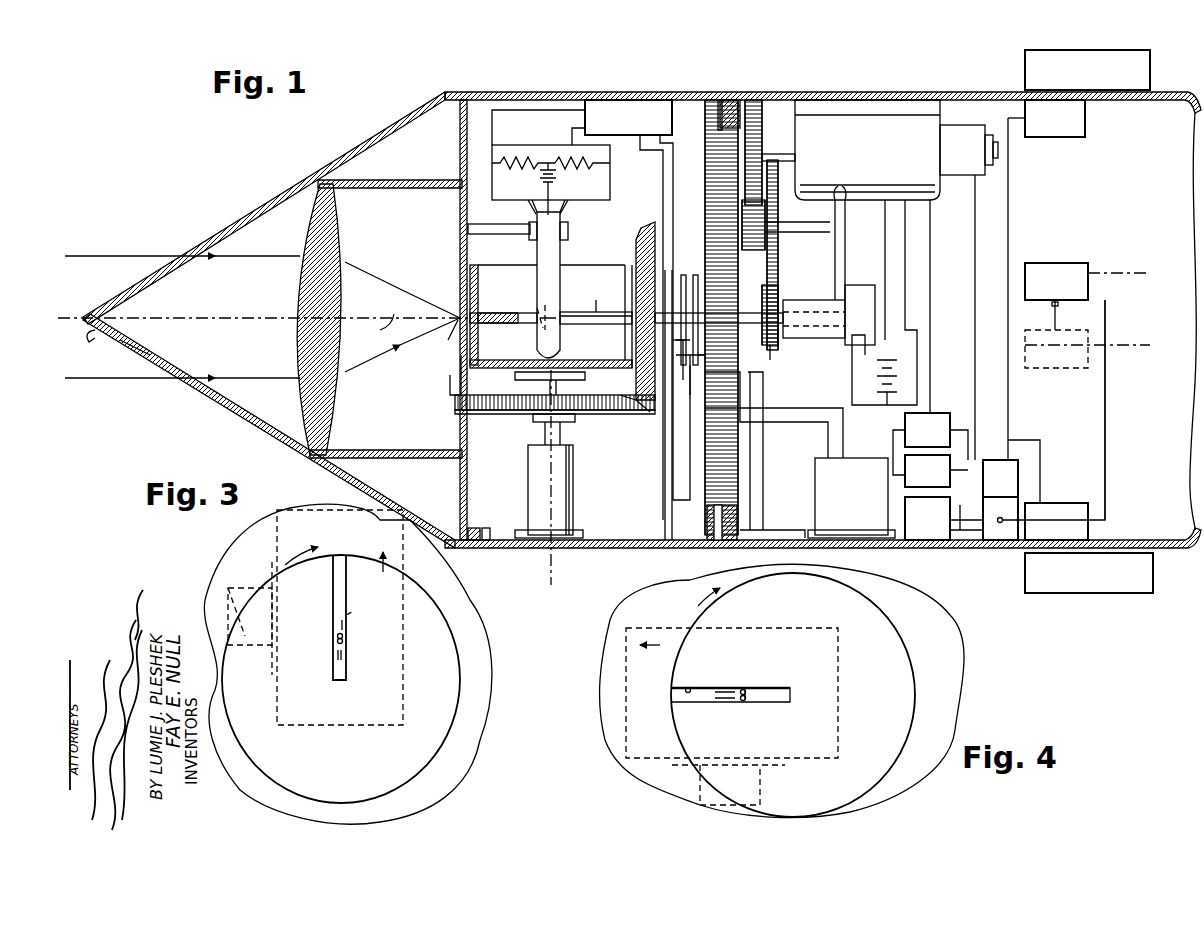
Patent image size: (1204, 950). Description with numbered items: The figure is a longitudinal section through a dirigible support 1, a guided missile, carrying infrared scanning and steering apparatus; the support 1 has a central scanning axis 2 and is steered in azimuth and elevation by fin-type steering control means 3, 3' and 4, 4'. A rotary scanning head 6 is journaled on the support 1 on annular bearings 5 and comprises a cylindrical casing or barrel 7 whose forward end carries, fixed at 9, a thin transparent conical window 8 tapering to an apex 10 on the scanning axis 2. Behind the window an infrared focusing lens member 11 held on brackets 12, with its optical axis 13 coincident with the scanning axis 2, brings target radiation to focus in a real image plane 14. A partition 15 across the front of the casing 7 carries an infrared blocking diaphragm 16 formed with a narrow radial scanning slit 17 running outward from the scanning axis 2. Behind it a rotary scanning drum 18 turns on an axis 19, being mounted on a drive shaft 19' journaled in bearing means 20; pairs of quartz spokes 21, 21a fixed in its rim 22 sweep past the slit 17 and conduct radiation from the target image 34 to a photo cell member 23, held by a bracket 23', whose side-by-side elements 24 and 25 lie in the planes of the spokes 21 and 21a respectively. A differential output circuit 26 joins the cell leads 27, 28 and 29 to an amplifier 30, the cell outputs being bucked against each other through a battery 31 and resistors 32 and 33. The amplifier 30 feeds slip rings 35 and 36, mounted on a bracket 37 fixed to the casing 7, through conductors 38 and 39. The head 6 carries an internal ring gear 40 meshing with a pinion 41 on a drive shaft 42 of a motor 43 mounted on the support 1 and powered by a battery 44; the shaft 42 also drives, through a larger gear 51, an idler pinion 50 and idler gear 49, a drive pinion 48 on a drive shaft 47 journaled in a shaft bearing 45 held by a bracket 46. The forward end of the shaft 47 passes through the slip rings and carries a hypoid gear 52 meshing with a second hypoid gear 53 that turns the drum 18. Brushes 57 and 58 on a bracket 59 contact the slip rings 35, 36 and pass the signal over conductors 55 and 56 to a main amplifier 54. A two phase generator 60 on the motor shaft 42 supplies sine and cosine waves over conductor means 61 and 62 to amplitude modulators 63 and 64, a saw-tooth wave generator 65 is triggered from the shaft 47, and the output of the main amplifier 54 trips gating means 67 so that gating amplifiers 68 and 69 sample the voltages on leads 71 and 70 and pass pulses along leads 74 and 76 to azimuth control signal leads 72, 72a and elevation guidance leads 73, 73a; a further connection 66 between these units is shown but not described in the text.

In FIG. 1, the dirigible support 1 is at (890, 92).
In FIG. 1, the central scanning axis 2 is at (85, 318).
In FIG. 1, the X coordinate steering control means 3 is at (771, 332).
In FIG. 1, the X coordinate steering control means 3' is at (1087, 333).
In FIG. 1, the Y coordinate steering control means 4 is at (1089, 584).
In FIG. 1, the Y coordinate steering control means 4' is at (1098, 70).
In FIG. 1, the annular bearings 5 is at (732, 548).
In FIG. 1, the rotary scanning head 6 is at (568, 80).
In FIG. 1, the cylindrical casing or barrel 7 is at (488, 550).
In FIG. 1, the transparent conical nose or infrared radiation passing window 8 is at (194, 400).
In FIG. 4, the transparent conical nose or infrared radiation passing window 8 is at (722, 695).
In FIG. 1, the forward end fixing of window 9 is at (460, 552).
In FIG. 1, the apex of window 10 is at (88, 337).
In FIG. 1, the infrared radiation focusing lens member 11 is at (336, 410).
In FIG. 1, the brackets 12 is at (376, 456).
In FIG. 1, the optical axis 13 is at (386, 326).
In FIG. 1, the real image focusing plane 14 is at (494, 310).
In FIG. 1, the partition 15 is at (461, 234).
In FIG. 3, the partition 15 is at (455, 737).
In FIG. 4, the partition 15 is at (938, 661).
In FIG. 1, the infrared radiation blocking diaphragm 16 is at (460, 360).
In FIG. 3, the infrared radiation blocking diaphragm 16 is at (454, 622).
In FIG. 4, the infrared radiation blocking diaphragm 16 is at (912, 640).
In FIG. 1, the radial scanning slot or slit 17 is at (455, 324).
In FIG. 3, the radial scanning slot or slit 17 is at (346, 626).
In FIG. 4, the radial scanning slot or slit 17 is at (732, 690).
In FIG. 1, the rotary scanning drum 18 is at (580, 258).
In FIG. 3, the rotary scanning drum 18 is at (412, 608).
In FIG. 4, the rotary scanning drum 18 is at (668, 626).
In FIG. 1, the drum axis 19 is at (578, 477).
In FIG. 1, the drive shaft 19' is at (571, 429).
In FIG. 1, the bearing means 20 is at (528, 481).
In FIG. 3, the bearing means 20 is at (250, 618).
In FIG. 4, the bearing means 20 is at (765, 782).
In FIG. 1, the infrared radiation transmitting spoke 21 is at (580, 324).
In FIG. 3, the infrared radiation transmitting spoke 21 is at (336, 640).
In FIG. 4, the infrared radiation transmitting spoke 21 is at (745, 699).
In FIG. 1, the infrared radiation transmitting spoke 21a is at (598, 298).
In FIG. 3, the infrared radiation transmitting spoke 21a is at (352, 644).
In FIG. 4, the infrared radiation transmitting spoke 21a is at (750, 688).
In FIG. 1, the rim of drum 22 is at (622, 276).
In FIG. 1, the photo cell member 23 is at (534, 242).
In FIG. 1, the bracket 23' is at (499, 237).
In FIG. 1, the infrared radiation responsive cell element 24 is at (536, 338).
In FIG. 1, the infrared radiation responsive cell element 25 is at (534, 306).
In FIG. 1, the differential output circuit 26 is at (618, 188).
In FIG. 1, the photo cell lead 27 is at (545, 197).
In FIG. 1, the photo cell lead 28 is at (524, 209).
In FIG. 1, the photo cell lead 29 is at (580, 209).
In FIG. 1, the amplifier 30 is at (620, 100).
In FIG. 1, the battery 31 is at (557, 180).
In FIG. 1, the resistor 32 is at (523, 154).
In FIG. 1, the resistor 33 is at (581, 154).
In FIG. 3, the infrared target image 34 is at (354, 614).
In FIG. 4, the infrared target image 34 is at (690, 688).
In FIG. 1, the slip ring 35 is at (683, 272).
In FIG. 1, the slip ring 36 is at (695, 272).
In FIG. 1, the bracket 37 is at (664, 489).
In FIG. 1, the conductor 38 is at (662, 178).
In FIG. 1, the conductor 39 is at (678, 317).
In FIG. 1, the internal ring gear 40 is at (705, 489).
In FIG. 1, the pinion 41 is at (710, 152).
In FIG. 1, the drive shaft 42 is at (772, 150).
In FIG. 1, the motor 43 is at (867, 150).
In FIG. 1, the battery or current source 44 is at (876, 374).
In FIG. 1, the shaft bearing 45 is at (822, 305).
In FIG. 1, the bracket 46 is at (845, 245).
In FIG. 1, the drive shaft 47 is at (780, 345).
In FIG. 1, the drive pinion 48 is at (772, 354).
In FIG. 1, the idler gear 49 is at (778, 273).
In FIG. 1, the idler pinion 50 is at (786, 234).
In FIG. 1, the larger gear 51 is at (757, 100).
In FIG. 1, the hypoid gear 52 is at (637, 311).
In FIG. 1, the second hypoid gear 53 is at (484, 424).
In FIG. 1, the main amplifier 54 is at (860, 525).
In FIG. 1, the electrical input conductor 55 is at (828, 440).
In FIG. 1, the electrical input conductor 56 is at (843, 440).
In FIG. 1, the brush 57 is at (696, 360).
In FIG. 1, the brush 58 is at (690, 345).
In FIG. 1, the bracket 59 is at (764, 512).
In FIG. 1, the two phase sine and cosine wave electrical generator 60 is at (955, 135).
In FIG. 1, the electrical conductor means 61 is at (931, 385).
In FIG. 1, the electrical conductor means 62 is at (976, 385).
In FIG. 1, the sine wave amplitude modulator 63 is at (927, 430).
In FIG. 1, the cosine wave amplitude modulator 64 is at (927, 471).
In FIG. 1, the saw-tooth wave generator 65 is at (860, 292).
In FIG. 1, the lead wire 66 is at (893, 428).
In FIG. 1, the gating means 67 is at (927, 518).
In FIG. 1, the gating amplifier 68 is at (1000, 478).
In FIG. 1, the gating amplifier 69 is at (1000, 518).
In FIG. 1, the lead 70 is at (968, 436).
In FIG. 1, the lead 71 is at (966, 517).
In FIG. 1, the missile control signal lead 72 is at (1086, 124).
In FIG. 1, the missile control signal lead 72a is at (1078, 499).
In FIG. 1, the elevation guidance lead 73 is at (1056, 266).
In FIG. 1, the elevation guidance lead 73a is at (1054, 370).
In FIG. 1, the lead 74 is at (1009, 420).
In FIG. 1, the lead 76 is at (1106, 498).